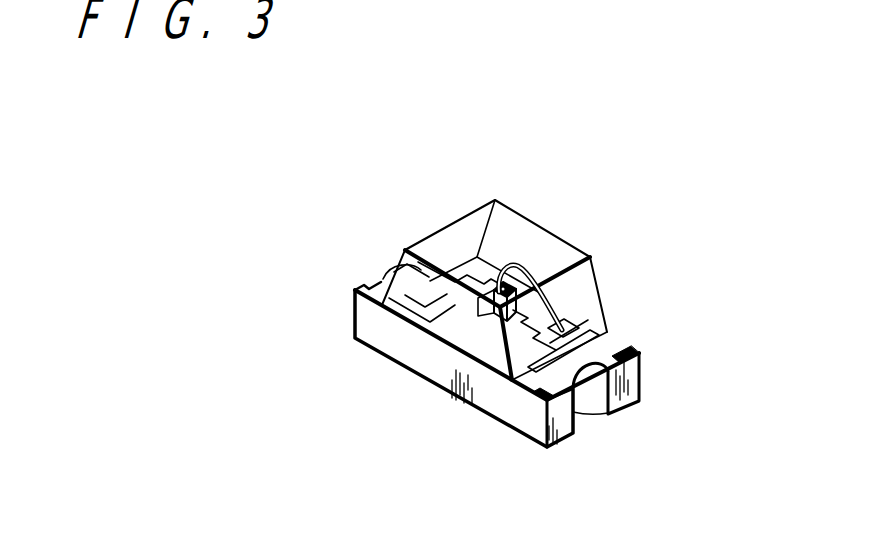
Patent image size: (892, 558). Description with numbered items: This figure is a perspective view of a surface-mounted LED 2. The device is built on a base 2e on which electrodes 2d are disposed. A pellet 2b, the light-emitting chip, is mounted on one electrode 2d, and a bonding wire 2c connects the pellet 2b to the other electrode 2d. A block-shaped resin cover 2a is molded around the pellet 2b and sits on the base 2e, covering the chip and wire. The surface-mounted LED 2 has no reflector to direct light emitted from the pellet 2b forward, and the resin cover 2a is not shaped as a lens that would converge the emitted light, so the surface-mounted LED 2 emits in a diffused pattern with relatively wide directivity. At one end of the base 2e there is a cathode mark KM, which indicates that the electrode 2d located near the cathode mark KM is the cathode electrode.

The surface-mounted LED 2 is at (371, 218).
The resin cover 2a is at (537, 218).
The pellet 2b is at (483, 312).
The bonding wire 2c is at (500, 272).
The electrode 2d is at (379, 278).
The base 2e is at (445, 372).
The cathode mark KM is at (543, 400).